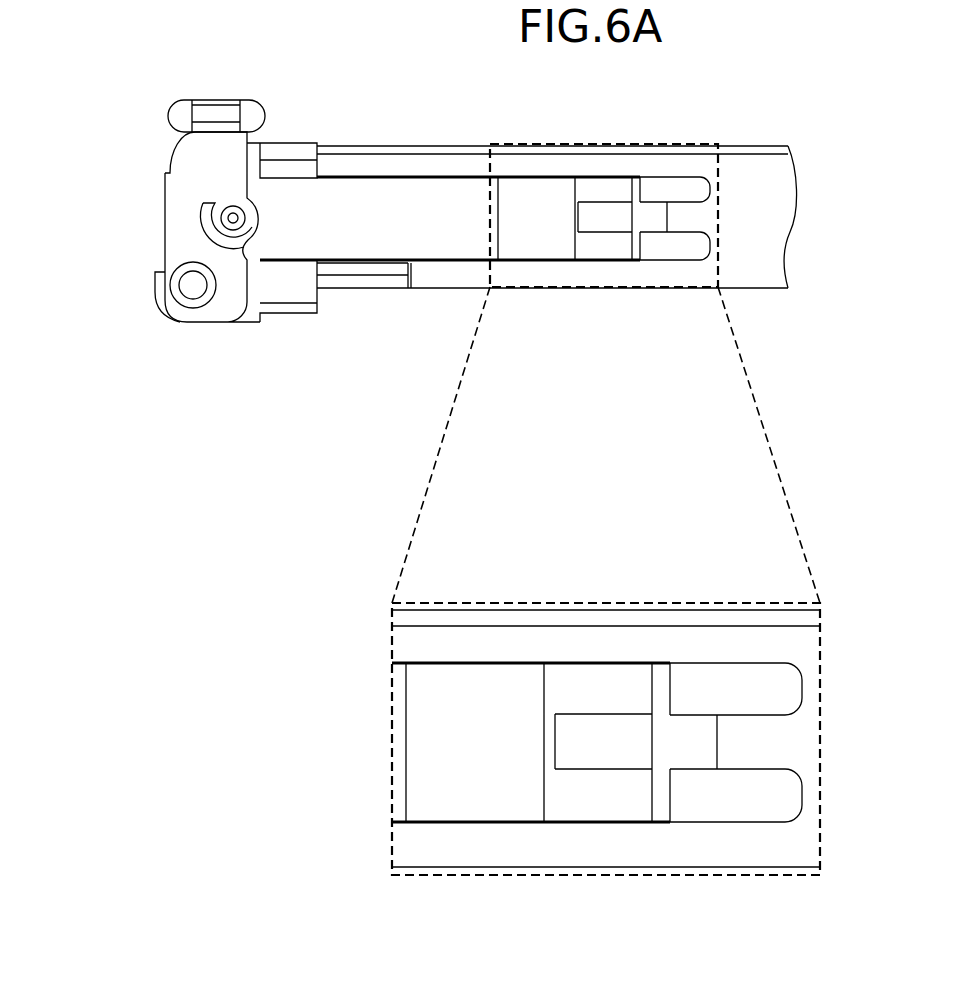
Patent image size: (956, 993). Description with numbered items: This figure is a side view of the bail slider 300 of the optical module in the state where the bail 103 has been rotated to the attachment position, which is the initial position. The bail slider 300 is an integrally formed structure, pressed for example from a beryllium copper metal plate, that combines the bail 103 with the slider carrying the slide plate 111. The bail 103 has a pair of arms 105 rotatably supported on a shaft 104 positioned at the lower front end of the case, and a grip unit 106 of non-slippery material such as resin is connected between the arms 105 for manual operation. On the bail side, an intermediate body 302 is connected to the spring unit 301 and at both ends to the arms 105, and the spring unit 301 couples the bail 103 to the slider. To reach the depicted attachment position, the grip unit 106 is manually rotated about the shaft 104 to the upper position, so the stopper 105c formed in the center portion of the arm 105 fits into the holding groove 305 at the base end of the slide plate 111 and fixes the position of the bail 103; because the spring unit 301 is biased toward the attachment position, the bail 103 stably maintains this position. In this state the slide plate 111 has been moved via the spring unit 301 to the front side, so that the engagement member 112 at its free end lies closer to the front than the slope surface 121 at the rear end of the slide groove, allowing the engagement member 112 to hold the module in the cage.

The bail 103 is at (155, 150).
The shaft 104 is at (193, 285).
The arm 105 is at (192, 198).
The stopper 105c is at (238, 224).
The grip unit 106 is at (250, 112).
The slide plate 111 is at (378, 196).
The engagement member 112 is at (634, 183).
The slope surface 121 is at (650, 217).
The bail slider 300 is at (750, 98).
The spring unit 301 is at (157, 305).
The intermediate body 302 is at (155, 283).
The holding groove 305 is at (300, 301).